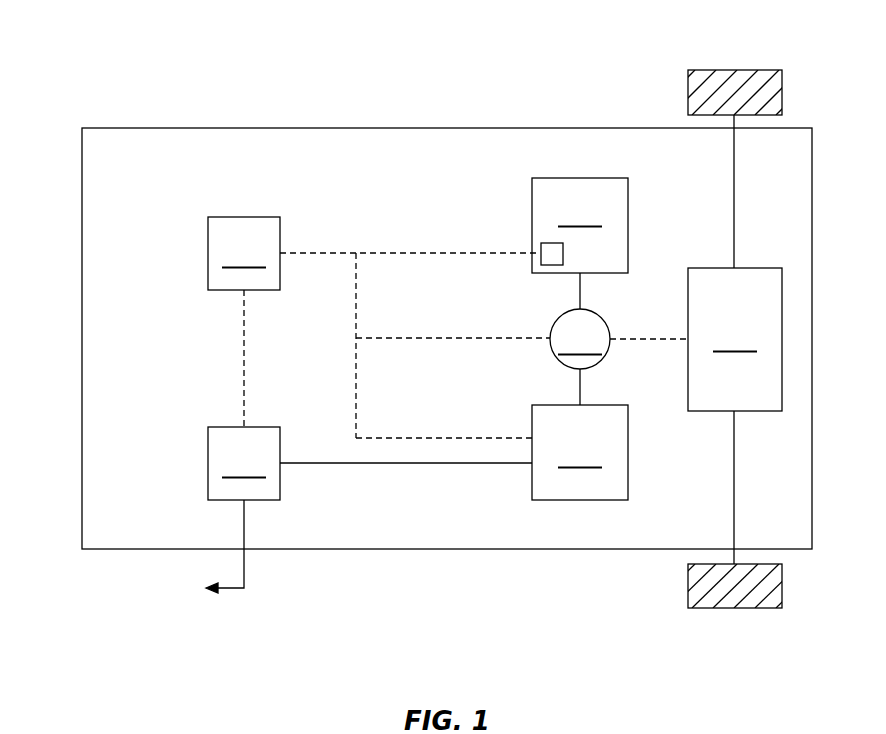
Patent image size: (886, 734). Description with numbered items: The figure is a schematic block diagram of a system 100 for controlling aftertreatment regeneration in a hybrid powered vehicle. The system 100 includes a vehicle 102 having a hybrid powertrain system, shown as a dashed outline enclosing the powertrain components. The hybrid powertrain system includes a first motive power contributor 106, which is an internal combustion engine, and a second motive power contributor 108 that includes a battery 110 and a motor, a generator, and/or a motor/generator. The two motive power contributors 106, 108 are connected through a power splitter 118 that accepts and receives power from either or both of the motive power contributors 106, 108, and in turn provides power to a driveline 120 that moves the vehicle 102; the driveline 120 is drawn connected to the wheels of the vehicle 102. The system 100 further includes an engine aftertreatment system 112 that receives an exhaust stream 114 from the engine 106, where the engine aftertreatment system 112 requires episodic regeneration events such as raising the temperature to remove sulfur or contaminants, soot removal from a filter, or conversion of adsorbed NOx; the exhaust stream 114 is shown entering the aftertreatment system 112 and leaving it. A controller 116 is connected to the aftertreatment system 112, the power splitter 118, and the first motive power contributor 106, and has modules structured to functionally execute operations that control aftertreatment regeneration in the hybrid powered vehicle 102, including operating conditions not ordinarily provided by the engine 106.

The system 100 is at (130, 56).
The vehicle 102 is at (472, 549).
The first motive power contributor 106 is at (580, 452).
The second motive power contributor 108 is at (580, 243).
The battery 110 is at (541, 262).
The engine aftertreatment system 112 is at (244, 463).
The exhaust stream 114 is at (407, 465).
The controller 116 is at (379, 327).
The power splitter 118 is at (619, 357).
The driveline 120 is at (735, 339).